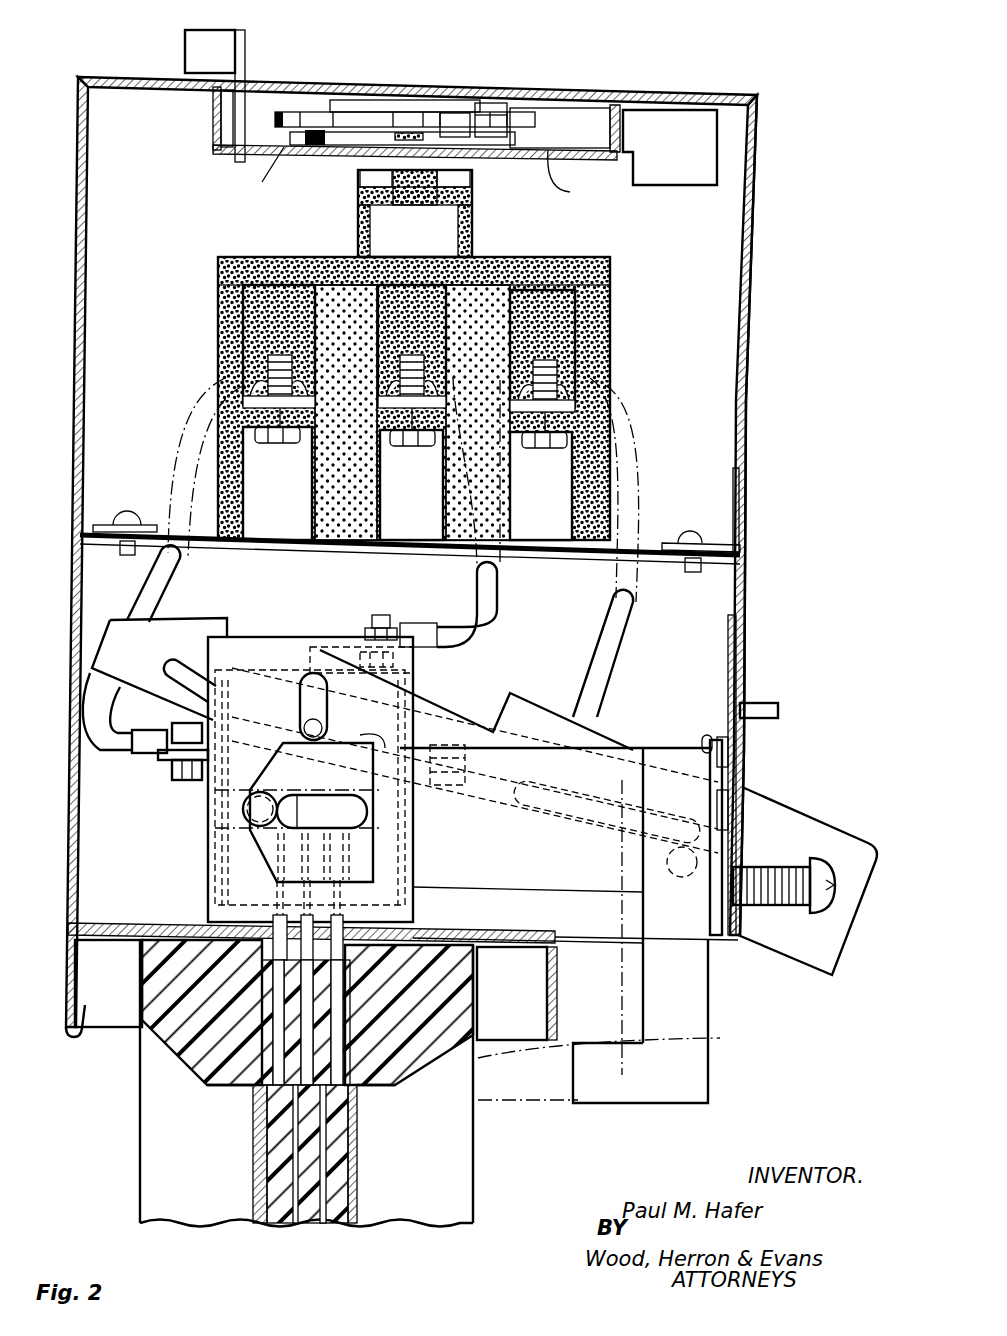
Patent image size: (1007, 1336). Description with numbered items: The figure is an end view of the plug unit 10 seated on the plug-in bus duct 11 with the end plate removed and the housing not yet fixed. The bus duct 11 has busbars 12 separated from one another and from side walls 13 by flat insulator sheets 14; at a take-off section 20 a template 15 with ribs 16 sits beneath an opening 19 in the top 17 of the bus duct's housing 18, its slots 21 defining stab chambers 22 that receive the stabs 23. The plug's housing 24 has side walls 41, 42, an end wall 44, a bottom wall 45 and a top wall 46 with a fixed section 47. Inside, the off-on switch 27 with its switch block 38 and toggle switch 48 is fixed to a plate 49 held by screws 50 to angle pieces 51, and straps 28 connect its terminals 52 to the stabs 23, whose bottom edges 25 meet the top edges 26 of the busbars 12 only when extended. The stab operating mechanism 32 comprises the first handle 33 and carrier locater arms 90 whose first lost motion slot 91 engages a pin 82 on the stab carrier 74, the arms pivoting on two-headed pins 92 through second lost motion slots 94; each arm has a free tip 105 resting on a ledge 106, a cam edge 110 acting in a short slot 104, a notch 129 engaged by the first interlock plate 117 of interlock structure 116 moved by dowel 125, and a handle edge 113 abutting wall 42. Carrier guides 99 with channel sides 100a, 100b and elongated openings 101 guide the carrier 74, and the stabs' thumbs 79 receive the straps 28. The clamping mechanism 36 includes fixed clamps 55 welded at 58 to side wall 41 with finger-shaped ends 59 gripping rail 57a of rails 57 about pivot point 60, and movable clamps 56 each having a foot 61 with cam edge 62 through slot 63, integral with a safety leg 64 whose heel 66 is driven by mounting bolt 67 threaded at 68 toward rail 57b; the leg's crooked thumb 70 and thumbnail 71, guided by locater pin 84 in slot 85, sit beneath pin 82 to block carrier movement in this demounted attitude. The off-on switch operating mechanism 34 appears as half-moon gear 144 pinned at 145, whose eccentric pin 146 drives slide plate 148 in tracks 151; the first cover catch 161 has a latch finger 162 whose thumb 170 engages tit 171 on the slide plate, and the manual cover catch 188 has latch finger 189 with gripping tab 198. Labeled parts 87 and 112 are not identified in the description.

The plug unit 10 is at (838, 53).
The plug-in bus duct 11 is at (708, 613).
The busbars 12 is at (275, 1225).
The side walls 13 is at (255, 1160).
The flat insulator sheets 14 is at (205, 103).
The template 15 is at (478, 997).
The ribs 16 is at (228, 1086).
The top 17 is at (565, 957).
The bus duct's housing 18 is at (559, 1012).
The opening 19 is at (386, 955).
The take-off section 20 is at (185, 978).
The slots 21 is at (350, 990).
The stab chambers 22 is at (265, 1033).
The stabs 23 is at (337, 912).
The plug's housing 24 is at (762, 300).
The bottom edges 25 is at (340, 958).
The top edges 26 is at (258, 1115).
The off-on switch 27 is at (640, 343).
The straps 28 is at (180, 572).
The stab operating mechanism 32 is at (492, 704).
The first handle 33 is at (840, 835).
The off-on switch operating mechanism 34 is at (457, 105).
The clamping mechanism 36 is at (600, 1116).
The open-close switch block 38 is at (566, 272).
The side wall 41 is at (78, 285).
The side wall 42 is at (752, 375).
The end wall 44 is at (371, 279).
The bottom wall 45 is at (530, 932).
The top wall 46 is at (592, 94).
The fixed section 47 is at (296, 84).
The toggle switch 48 is at (415, 205).
The plate 49 is at (404, 553).
The screws 50 is at (126, 514).
The angle pieces 51 is at (91, 541).
The terminals 52 is at (280, 442).
The fixed clamps 55 is at (58, 1010).
The movable clamps 56 is at (706, 1045).
The rails 57 is at (90, 958).
The rail 57a is at (76, 993).
The rail 57b is at (559, 997).
The weld 58 is at (65, 832).
The finger-shaped configuration 59 is at (90, 1010).
The point 60 is at (66, 1040).
The foot 61 is at (570, 1108).
The angulated upper edge 62 is at (570, 1053).
The slot 63 is at (612, 936).
The safety leg 64 is at (600, 736).
The heel 66 is at (712, 830).
The mounting bolt 67 is at (800, 906).
The threaded engagement 68 is at (750, 875).
The crooked thumb 70 is at (385, 748).
The thumbnail 71 is at (350, 757).
The stab carrier 74 is at (256, 664).
The thumb 79 is at (372, 612).
The pin 82 is at (323, 728).
The fixed locater pin 84 is at (258, 828).
The slot 85 is at (362, 828).
The spring 87 is at (360, 735).
The carrier locater arm 90 is at (515, 700).
The first lost motion slot 91 is at (189, 660).
The two-headed pin 92 is at (680, 878).
The second lost motion slot 94 is at (600, 793).
The carrier guide 99 is at (240, 628).
The channel side 100a is at (413, 867).
The channel side 100b is at (205, 895).
The elongated opening 101 is at (300, 690).
The short slot 104 is at (205, 811).
The free tip 105 is at (117, 637).
The ledge 106 is at (176, 715).
The cam edge 110 is at (172, 622).
The link 112 is at (468, 712).
The handle edge 113 is at (740, 800).
The interlock structure 116 is at (707, 700).
The first interlock plate 117 is at (737, 645).
The dowel 125 is at (780, 710).
The notch 129 is at (729, 818).
The half-moon gear 144 is at (370, 110).
The pin 145 is at (413, 92).
The eccentrically mounted pin 146 is at (460, 150).
The slide plate 148 is at (330, 148).
The tracks 151 is at (423, 170).
The first cover catch 161 is at (665, 196).
The latch finger 162 is at (560, 128).
The thumb 170 is at (488, 108).
The tit 171 is at (496, 118).
The manual cover catch 188 is at (281, 36).
The latch finger 189 is at (228, 118).
The gripping tab 198 is at (186, 50).